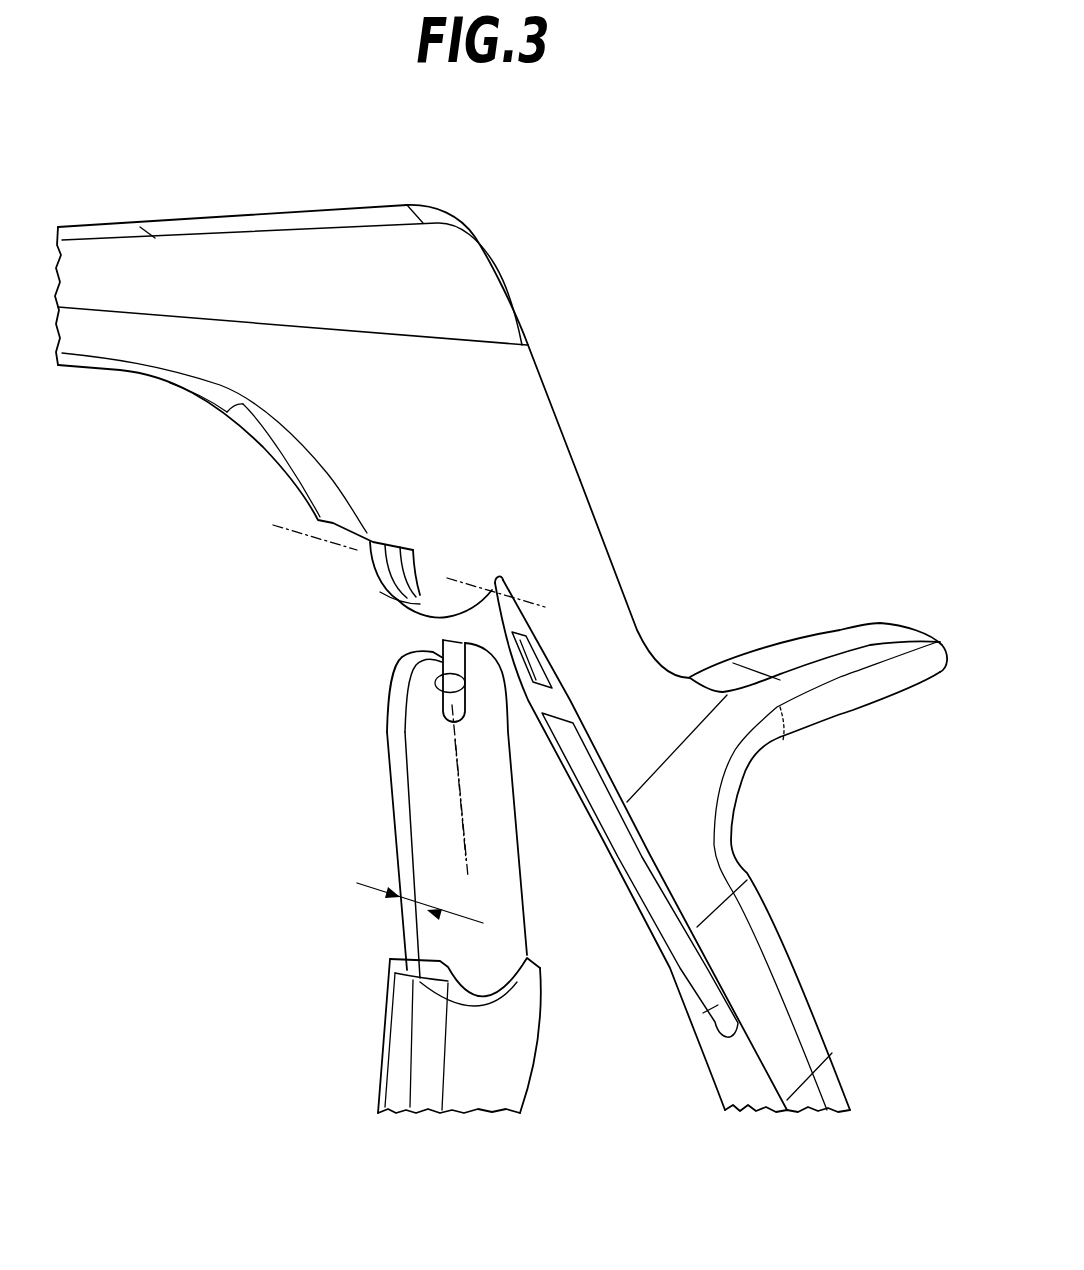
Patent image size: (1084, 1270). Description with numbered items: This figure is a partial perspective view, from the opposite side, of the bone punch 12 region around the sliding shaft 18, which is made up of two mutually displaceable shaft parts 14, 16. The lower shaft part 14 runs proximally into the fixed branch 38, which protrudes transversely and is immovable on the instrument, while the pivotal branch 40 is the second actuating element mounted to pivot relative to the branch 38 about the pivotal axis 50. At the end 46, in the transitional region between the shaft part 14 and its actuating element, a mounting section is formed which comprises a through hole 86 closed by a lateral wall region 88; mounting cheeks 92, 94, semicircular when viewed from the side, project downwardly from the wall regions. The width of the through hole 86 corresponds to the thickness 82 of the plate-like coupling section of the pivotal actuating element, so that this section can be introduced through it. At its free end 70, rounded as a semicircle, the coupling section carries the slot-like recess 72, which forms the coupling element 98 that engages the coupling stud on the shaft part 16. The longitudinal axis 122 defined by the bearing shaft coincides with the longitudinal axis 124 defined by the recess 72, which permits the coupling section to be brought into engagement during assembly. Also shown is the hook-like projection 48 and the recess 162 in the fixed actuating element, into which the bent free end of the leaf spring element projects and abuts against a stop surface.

The bracket assembly 12 is at (259, 146).
The shaft part 14 is at (95, 375).
The shaft part 16 is at (81, 219).
The sliding shaft 18 is at (141, 218).
The branch 38 is at (858, 1061).
The branch 40 is at (363, 1076).
The end 46 is at (502, 387).
The hook 48 is at (840, 637).
The pivotal axis 50 is at (280, 533).
The free end 70 is at (430, 650).
The slot-like recess 72 is at (436, 684).
The thickness 82 is at (405, 920).
The through hole 86 is at (512, 633).
The lateral wall region 88 is at (523, 458).
The mounting cheek 92 is at (372, 567).
The mounting cheek 94 is at (398, 594).
The coupling element 98 is at (450, 683).
The longitudinal axis 122 is at (463, 838).
The longitudinal axis 124 is at (462, 757).
The recess 162 is at (657, 885).